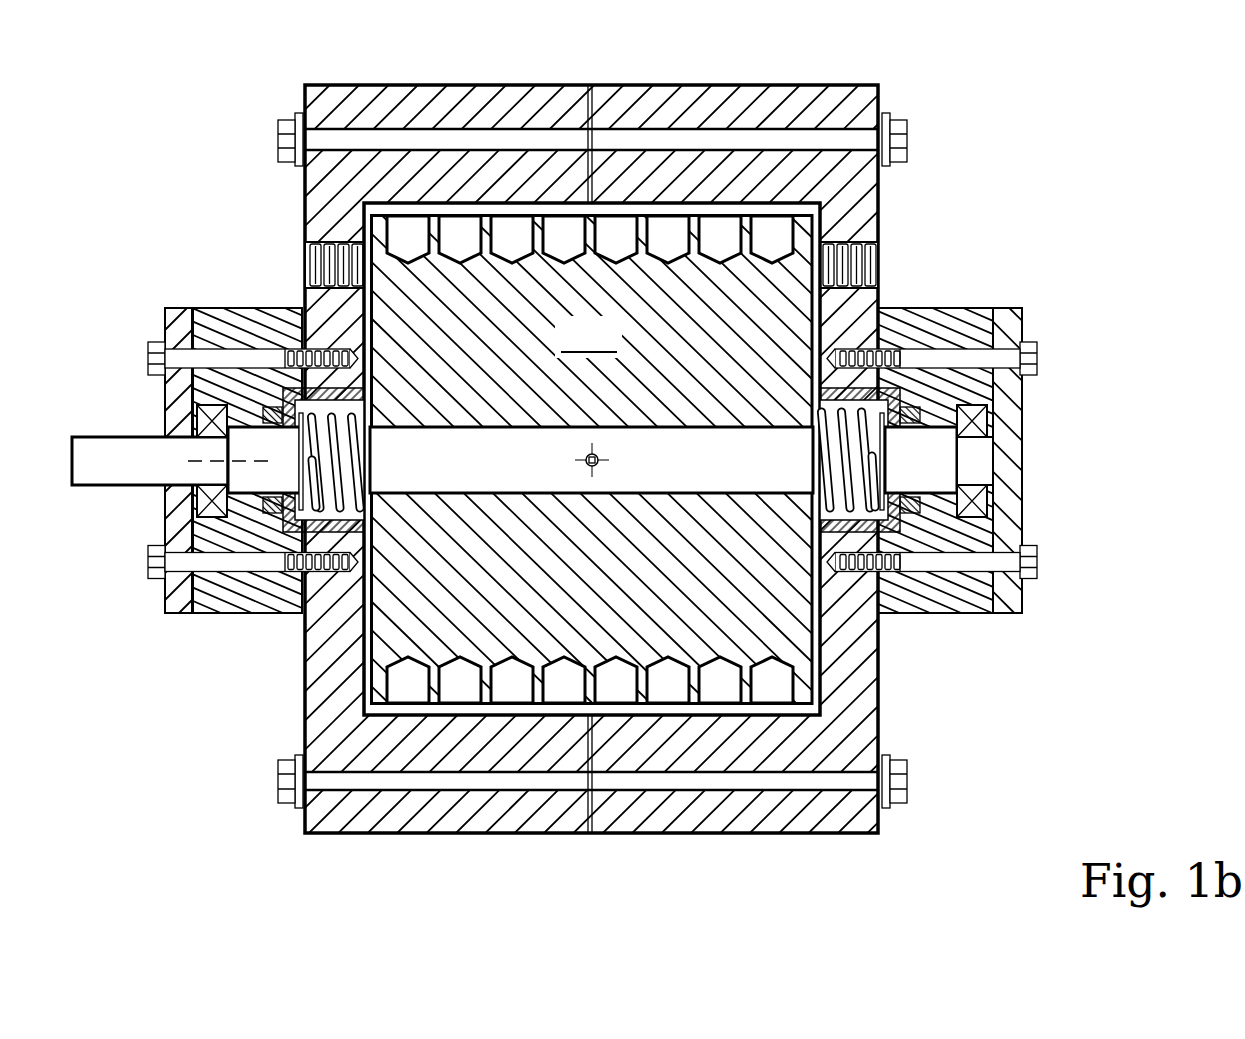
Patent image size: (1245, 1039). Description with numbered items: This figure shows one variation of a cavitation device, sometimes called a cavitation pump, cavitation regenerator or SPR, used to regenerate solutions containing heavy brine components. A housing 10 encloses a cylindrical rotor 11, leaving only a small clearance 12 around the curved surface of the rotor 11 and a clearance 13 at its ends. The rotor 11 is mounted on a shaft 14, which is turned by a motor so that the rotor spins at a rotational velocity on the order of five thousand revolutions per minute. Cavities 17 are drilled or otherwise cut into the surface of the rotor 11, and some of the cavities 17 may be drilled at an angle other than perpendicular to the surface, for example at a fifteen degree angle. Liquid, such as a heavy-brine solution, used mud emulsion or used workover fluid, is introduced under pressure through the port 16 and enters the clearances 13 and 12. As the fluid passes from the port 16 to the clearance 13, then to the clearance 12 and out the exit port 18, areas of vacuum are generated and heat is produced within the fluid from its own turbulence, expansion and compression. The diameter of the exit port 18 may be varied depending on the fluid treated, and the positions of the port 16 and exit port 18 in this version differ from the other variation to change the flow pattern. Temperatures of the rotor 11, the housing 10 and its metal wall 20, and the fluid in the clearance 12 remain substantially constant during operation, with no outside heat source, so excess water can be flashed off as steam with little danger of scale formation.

The housing 10 is at (362, 105).
The cylindrical rotor 11 is at (592, 460).
The clearance 12 is at (612, 213).
The clearance 13 is at (372, 636).
The shaft 14 is at (140, 462).
The port 16 is at (320, 260).
The cavities 17 is at (773, 233).
The exit port 18 is at (880, 260).
The metal wall 20 is at (850, 747).